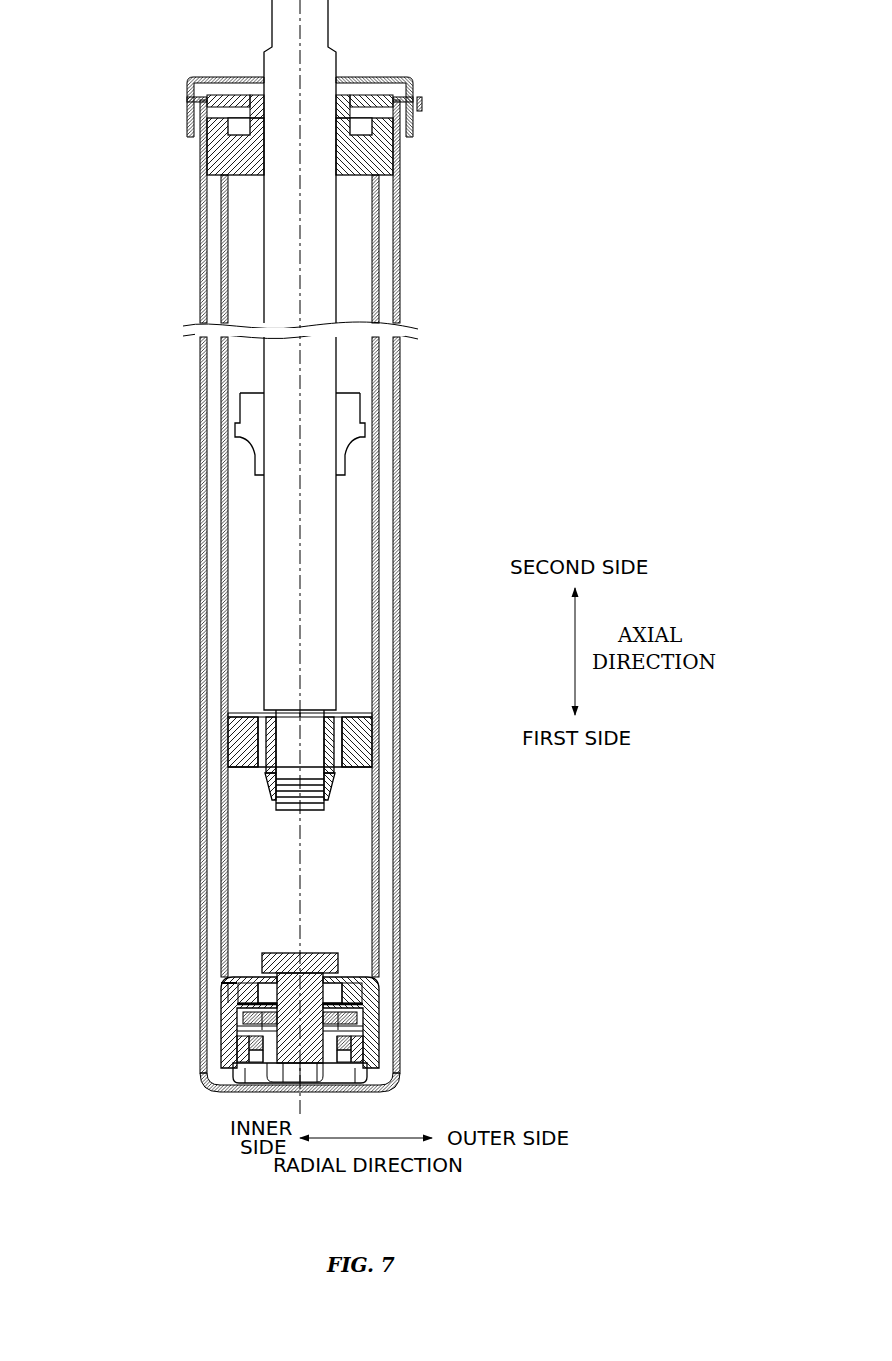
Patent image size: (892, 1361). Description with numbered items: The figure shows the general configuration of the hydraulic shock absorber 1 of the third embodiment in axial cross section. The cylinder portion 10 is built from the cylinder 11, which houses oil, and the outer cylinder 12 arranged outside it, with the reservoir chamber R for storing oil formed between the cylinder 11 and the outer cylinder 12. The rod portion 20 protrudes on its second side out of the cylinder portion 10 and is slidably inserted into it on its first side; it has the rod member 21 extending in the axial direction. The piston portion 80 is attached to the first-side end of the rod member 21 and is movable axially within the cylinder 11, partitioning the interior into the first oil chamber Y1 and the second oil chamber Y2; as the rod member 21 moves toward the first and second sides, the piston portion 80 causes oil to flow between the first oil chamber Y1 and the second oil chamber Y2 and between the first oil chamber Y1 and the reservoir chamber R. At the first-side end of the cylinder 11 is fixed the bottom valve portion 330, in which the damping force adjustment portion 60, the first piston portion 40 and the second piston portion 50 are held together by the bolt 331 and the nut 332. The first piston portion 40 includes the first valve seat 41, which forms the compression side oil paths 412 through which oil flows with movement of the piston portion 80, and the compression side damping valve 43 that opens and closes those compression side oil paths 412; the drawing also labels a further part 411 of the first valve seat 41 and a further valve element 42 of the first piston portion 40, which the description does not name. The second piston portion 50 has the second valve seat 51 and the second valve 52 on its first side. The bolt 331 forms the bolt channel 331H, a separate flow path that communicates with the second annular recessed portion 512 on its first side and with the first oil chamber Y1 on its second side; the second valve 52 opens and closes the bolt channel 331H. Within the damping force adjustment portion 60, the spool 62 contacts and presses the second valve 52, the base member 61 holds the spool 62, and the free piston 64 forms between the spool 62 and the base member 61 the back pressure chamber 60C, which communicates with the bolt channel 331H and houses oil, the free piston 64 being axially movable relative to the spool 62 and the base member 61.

The hydraulic shock absorber 1 is at (125, 105).
The cylinder portion 10 is at (408, 178).
The cylinder 11 is at (380, 284).
The outer cylinder 12 is at (400, 385).
The rod portion 20 is at (345, 63).
The rod member 21 is at (270, 538).
The piston portion 80 is at (228, 712).
The first piston portion 40 is at (383, 1013).
The first valve seat 41 is at (362, 1003).
The body passage 411 is at (372, 992).
The compression side oil paths 412 is at (232, 988).
The valve 42 is at (230, 978).
The compression side damping valve 43 is at (238, 1003).
The second piston portion 50 is at (240, 1033).
The second valve seat 51 is at (240, 1013).
The second annular recessed portion 512 is at (352, 1025).
The second valve 52 is at (368, 1040).
The damping force adjustment portion 60 is at (366, 1068).
The back pressure chamber 60C is at (246, 1052).
The base member 61 is at (378, 1086).
The spool 62 is at (250, 1088).
The free piston 64 is at (246, 1072).
The bottom valve portion 330 is at (332, 1074).
The bolt 331 is at (332, 958).
The bolt channel 331H is at (320, 978).
The nut 332 is at (275, 1102).
The first oil chamber Y1 is at (324, 883).
The second oil chamber Y2 is at (355, 560).
The reservoir chamber R is at (385, 846).